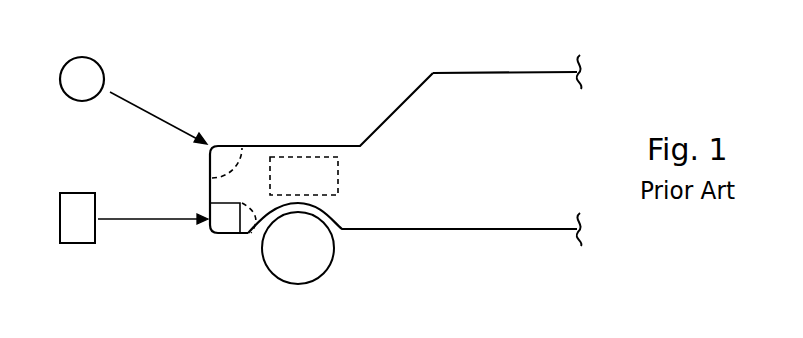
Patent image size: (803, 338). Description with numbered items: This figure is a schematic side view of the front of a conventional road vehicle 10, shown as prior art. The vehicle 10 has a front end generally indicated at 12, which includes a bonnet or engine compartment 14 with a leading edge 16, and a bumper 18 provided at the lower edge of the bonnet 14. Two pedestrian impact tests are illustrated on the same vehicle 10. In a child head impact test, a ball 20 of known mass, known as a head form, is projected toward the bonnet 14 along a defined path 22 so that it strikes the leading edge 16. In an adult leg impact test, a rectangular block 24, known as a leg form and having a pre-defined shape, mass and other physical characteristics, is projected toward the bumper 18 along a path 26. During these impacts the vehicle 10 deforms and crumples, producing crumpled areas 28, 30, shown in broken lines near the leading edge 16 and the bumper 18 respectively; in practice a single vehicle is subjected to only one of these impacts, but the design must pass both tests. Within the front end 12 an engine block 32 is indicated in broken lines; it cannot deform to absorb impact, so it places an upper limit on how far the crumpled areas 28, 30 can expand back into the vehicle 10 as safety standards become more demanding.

The road vehicle 10 is at (523, 82).
The front end 12 is at (213, 78).
The bonnet 14 is at (285, 147).
The leading edge 16 is at (210, 150).
The bumper 18 is at (223, 235).
The ball 20 is at (82, 80).
The path 22 is at (147, 108).
The rectangular block 24 is at (78, 245).
The path 26 is at (152, 221).
The crumpled area 28 is at (228, 150).
The crumpled area 30 is at (248, 236).
The engine block 32 is at (312, 167).